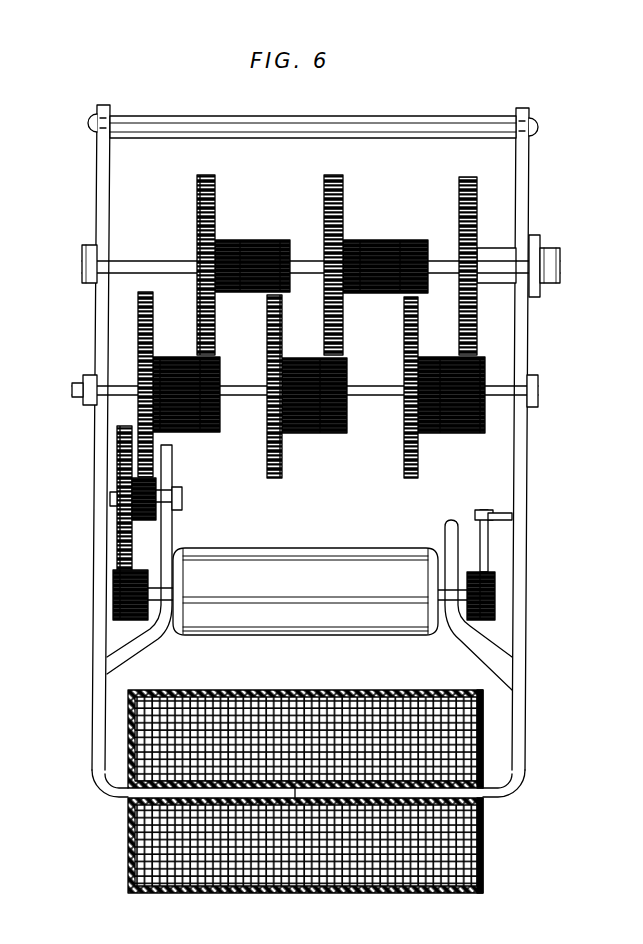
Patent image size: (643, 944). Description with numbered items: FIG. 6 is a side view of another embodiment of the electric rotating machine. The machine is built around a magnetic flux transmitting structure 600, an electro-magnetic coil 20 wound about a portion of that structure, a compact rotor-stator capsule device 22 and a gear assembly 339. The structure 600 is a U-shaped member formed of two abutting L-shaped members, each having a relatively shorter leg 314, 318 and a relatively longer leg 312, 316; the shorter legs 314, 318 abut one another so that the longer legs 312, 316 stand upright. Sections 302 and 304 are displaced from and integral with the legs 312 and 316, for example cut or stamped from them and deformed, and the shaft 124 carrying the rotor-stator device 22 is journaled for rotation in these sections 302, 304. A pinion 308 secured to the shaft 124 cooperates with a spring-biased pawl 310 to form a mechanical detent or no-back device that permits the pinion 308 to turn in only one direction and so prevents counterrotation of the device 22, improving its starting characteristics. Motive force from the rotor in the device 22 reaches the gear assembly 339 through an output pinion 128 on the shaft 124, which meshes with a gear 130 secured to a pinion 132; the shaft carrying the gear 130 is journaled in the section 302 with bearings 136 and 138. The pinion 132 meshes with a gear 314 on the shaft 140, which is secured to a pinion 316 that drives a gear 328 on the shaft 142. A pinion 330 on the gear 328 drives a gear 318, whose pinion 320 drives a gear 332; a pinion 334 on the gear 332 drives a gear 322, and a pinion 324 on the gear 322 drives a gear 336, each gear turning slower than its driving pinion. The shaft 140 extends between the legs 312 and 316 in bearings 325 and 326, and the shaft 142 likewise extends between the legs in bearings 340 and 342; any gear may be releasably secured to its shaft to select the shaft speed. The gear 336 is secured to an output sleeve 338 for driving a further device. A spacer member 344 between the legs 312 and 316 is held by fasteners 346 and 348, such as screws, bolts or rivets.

The magnetic flux transmitting structure 600 is at (88, 215).
The spacer member 344 is at (192, 117).
The fastener 346 is at (90, 125).
The fastener 348 is at (538, 122).
The gear assembly 339 is at (350, 158).
The shaft 142 is at (305, 262).
The shaft 140 is at (378, 396).
The bearing 342 is at (82, 257).
The bearing 340 is at (542, 237).
The output sleeve 338 is at (493, 255).
The bearing 325 is at (83, 405).
The bearing 326 is at (540, 405).
The gear 328 is at (197, 195).
The gear 332 is at (343, 180).
The gear 336 is at (470, 177).
The pinion 330 is at (253, 243).
The pinion 334 is at (393, 247).
The gear 314 is at (155, 300).
The gear 318 is at (277, 480).
The gear 322 is at (404, 330).
The pinion 316 is at (193, 432).
The pinion 320 is at (312, 433).
The pinion 324 is at (442, 433).
The gear 130 is at (117, 450).
The bearing 138 is at (112, 502).
The bearing 136 is at (182, 498).
The pinion 132 is at (143, 525).
The output pinion 128 is at (113, 597).
The shaft 124 is at (150, 590).
The compact rotor-stator capsule device 22 is at (310, 598).
The section 302 is at (135, 642).
The section 304 is at (473, 657).
The pawl 310 is at (483, 553).
The relatively longer leg 312 is at (95, 545).
The pinion 308 is at (497, 615).
The electro-magnetic coil 20 is at (347, 692).